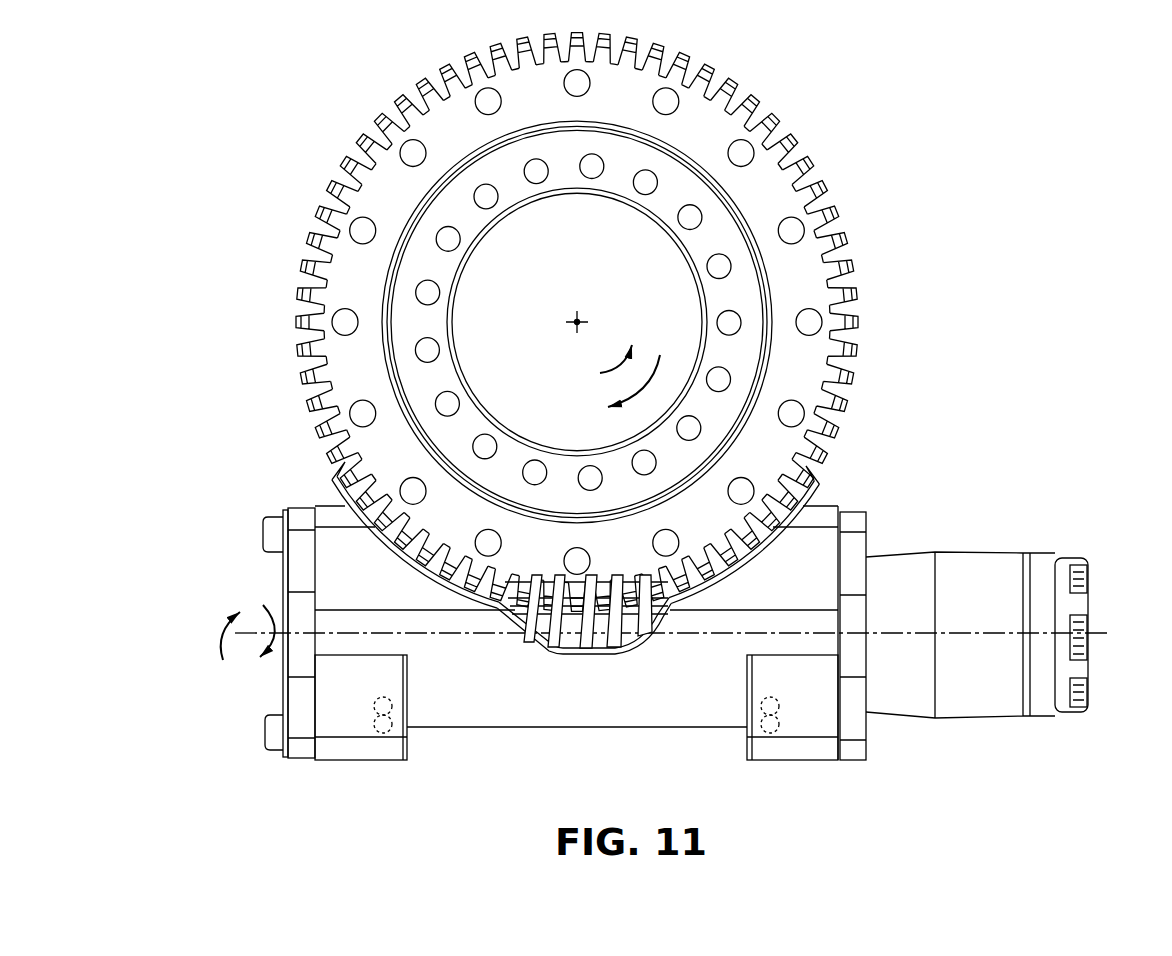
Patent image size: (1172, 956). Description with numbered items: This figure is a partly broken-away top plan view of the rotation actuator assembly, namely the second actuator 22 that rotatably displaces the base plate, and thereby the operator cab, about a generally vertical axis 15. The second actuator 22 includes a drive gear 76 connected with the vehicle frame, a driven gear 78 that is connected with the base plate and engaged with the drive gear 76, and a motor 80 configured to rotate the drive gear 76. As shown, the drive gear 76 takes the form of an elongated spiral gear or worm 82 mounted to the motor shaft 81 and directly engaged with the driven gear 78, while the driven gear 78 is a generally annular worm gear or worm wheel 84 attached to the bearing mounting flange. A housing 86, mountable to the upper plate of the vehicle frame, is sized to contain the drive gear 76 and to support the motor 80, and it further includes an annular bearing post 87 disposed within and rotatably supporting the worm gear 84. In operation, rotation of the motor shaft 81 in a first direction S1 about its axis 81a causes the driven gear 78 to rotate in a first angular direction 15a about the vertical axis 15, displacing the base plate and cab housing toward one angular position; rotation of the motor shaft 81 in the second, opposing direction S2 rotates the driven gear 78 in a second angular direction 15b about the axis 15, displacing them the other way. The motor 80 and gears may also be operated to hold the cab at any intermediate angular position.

The second actuator 22 is at (236, 305).
The driven gear 78 is at (634, 321).
The worm gear 84 is at (634, 322).
The annular bearing post 87 is at (577, 322).
The vertical axis 15 is at (581, 319).
The first angular direction 15a is at (631, 342).
The second angular direction 15b is at (614, 388).
The motor shaft axis 81a is at (455, 634).
The housing 86 is at (263, 530).
The worm 82 is at (652, 610).
The motor shaft 81 is at (620, 655).
The drive gear 76 is at (582, 647).
The motor 80 is at (1025, 551).
The first direction S1 is at (260, 647).
The second direction S2 is at (226, 620).